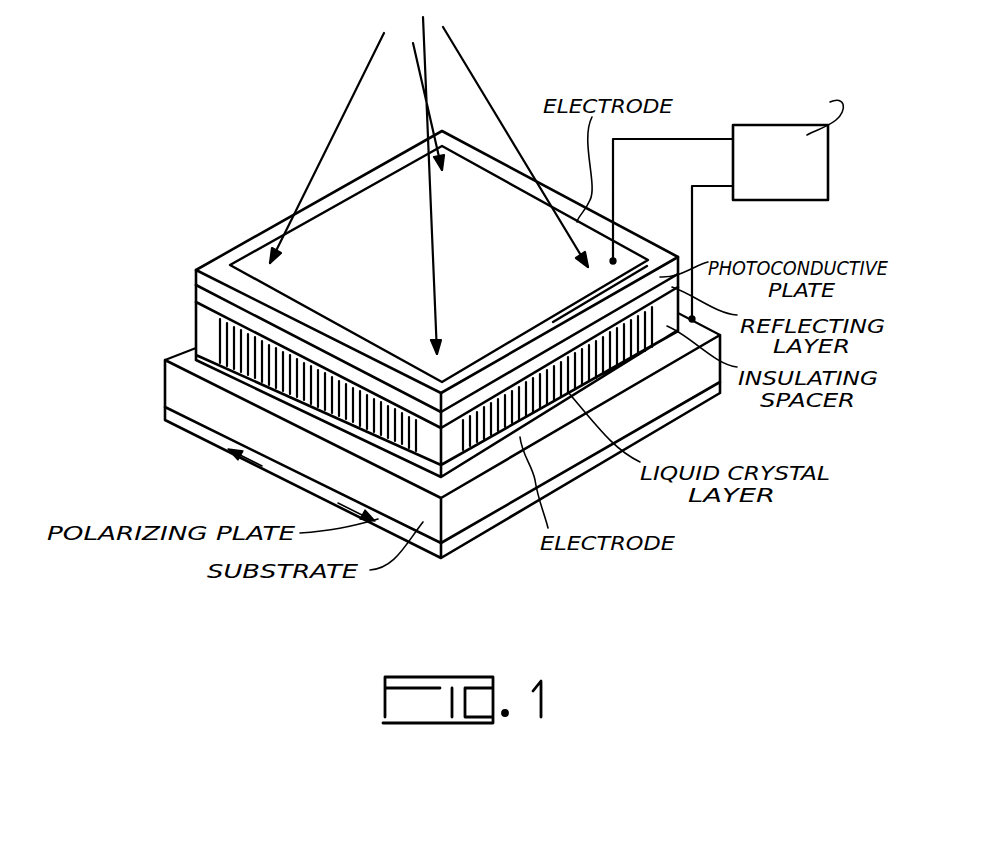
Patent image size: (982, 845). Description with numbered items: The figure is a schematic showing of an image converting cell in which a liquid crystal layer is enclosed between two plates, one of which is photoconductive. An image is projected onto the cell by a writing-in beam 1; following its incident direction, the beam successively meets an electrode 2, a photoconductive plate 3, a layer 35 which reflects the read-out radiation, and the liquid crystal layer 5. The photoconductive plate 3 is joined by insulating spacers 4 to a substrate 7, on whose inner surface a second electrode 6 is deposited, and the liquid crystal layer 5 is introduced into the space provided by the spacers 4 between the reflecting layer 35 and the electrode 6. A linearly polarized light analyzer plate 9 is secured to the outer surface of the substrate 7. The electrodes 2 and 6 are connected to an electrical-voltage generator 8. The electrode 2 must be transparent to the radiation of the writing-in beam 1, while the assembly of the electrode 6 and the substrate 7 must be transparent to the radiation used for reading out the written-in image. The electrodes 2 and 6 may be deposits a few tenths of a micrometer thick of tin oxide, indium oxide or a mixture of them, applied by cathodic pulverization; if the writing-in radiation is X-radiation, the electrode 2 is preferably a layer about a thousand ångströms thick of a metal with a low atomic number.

The writing-in beam 1 is at (383, 104).
The electrode 2 is at (244, 262).
The photoconductive plate 3 is at (196, 286).
The reflecting layer 35 is at (196, 302).
The insulating spacers 4 is at (200, 327).
The liquid crystal layer 5 is at (233, 356).
The second electrode 6 is at (233, 382).
The substrate 7 is at (222, 418).
The electrical-voltage generator 8 is at (796, 188).
The linearly polarized light analyzer plate 9 is at (172, 417).